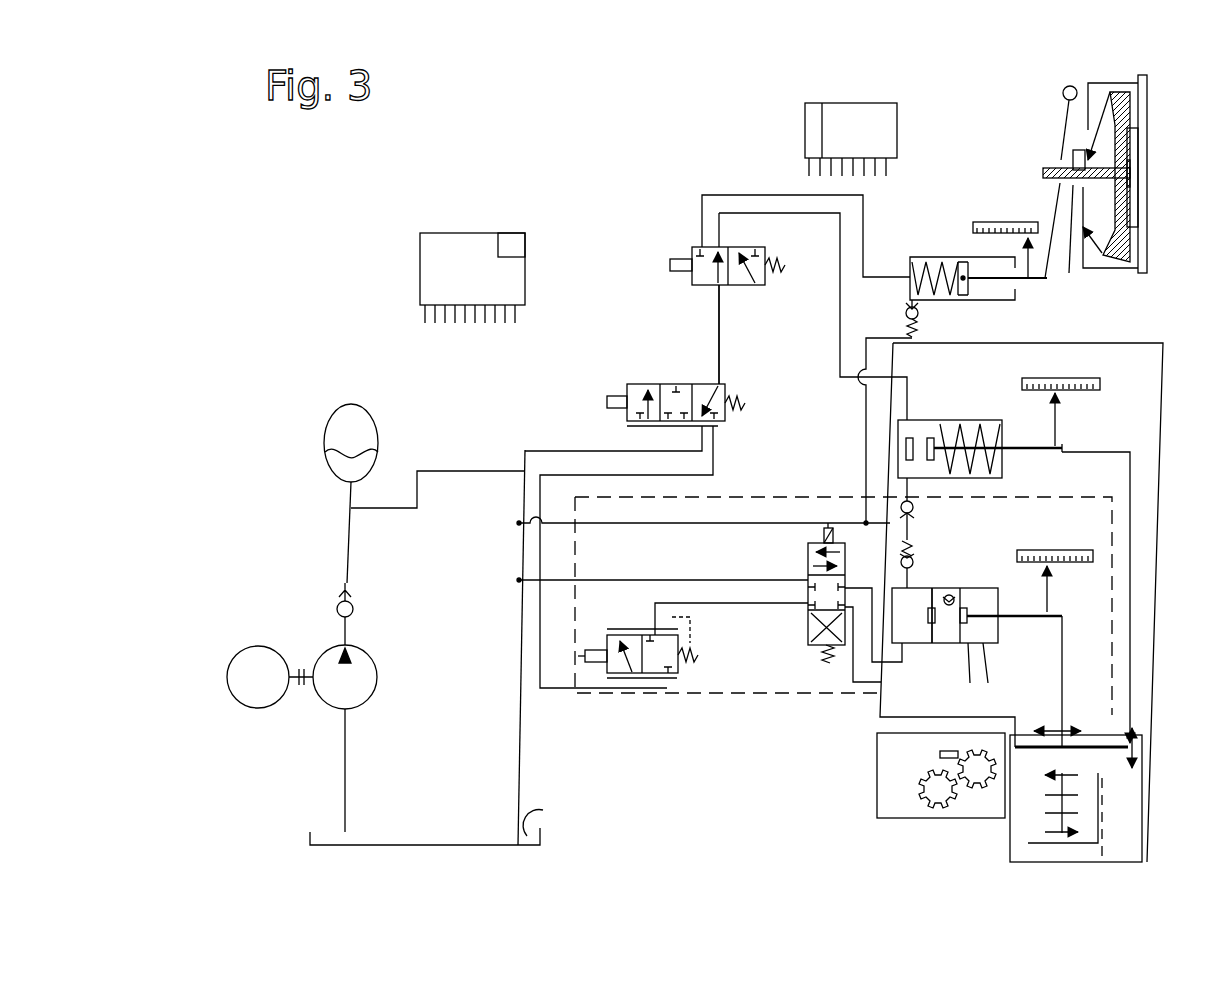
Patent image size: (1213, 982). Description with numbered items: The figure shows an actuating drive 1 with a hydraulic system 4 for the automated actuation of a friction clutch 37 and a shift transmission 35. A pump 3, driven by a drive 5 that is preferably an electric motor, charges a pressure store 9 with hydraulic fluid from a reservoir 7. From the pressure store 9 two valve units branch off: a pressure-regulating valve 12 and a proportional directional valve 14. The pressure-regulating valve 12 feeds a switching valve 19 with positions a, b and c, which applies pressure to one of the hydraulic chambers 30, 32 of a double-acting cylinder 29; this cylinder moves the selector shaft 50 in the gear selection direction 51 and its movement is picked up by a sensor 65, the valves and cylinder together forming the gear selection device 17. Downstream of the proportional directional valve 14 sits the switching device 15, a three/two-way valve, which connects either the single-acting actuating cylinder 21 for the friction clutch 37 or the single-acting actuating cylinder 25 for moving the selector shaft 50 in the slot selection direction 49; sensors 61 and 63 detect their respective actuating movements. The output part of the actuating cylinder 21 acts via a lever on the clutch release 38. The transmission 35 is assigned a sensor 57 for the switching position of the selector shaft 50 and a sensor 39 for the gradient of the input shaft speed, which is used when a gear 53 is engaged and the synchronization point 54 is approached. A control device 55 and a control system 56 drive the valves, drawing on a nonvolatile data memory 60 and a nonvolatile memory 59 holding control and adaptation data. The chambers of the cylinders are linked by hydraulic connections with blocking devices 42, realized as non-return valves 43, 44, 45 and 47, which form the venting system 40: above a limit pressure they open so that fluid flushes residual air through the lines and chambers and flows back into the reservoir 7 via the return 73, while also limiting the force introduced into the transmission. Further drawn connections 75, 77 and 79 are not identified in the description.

The actuating drive 1 is at (492, 200).
The pump 3 is at (360, 668).
The hydraulic system 4 is at (711, 705).
The drive 5 is at (246, 654).
The reservoir 7 is at (548, 820).
The pressure store 9 is at (322, 415).
The pressure-regulating valve 12 is at (615, 632).
The proportional directional valve 14 is at (735, 381).
The switching device 15 is at (694, 246).
The gear selection device 17 is at (700, 697).
The switching valve 19 is at (800, 648).
The actuating cylinder 21 is at (940, 257).
The actuating cylinder 25 is at (962, 417).
The double-acting cylinder 29 is at (922, 600).
The hydraulic chamber 30 is at (917, 633).
The hydraulic chamber 32 is at (971, 676).
The transmission 35 is at (888, 805).
The friction clutch 37 is at (1113, 82).
The clutch release 38 is at (1086, 196).
The sensor 39 is at (940, 755).
The venting system 40 is at (853, 512).
The blocking devices 42 is at (903, 313).
The non-return valve 43 is at (972, 585).
The non-return valve 44 is at (914, 507).
The non-return valve 45 is at (918, 548).
The non-return valve 47 is at (922, 325).
The slot selection direction 49 is at (1138, 746).
The selector shaft 50 is at (1090, 745).
The gear selection direction 51 is at (1051, 727).
The gear 53 is at (1030, 830).
The synchronization point 54 is at (1070, 766).
The control device 55 is at (435, 252).
The control system 56 is at (858, 110).
The sensor 57 is at (1112, 812).
The nonvolatile memory 59 is at (527, 243).
The nonvolatile data memory 60 is at (812, 110).
The sensor 61 is at (1000, 221).
The sensor 63 is at (1084, 377).
The sensor 65 is at (1062, 551).
The return 73 is at (520, 778).
The return connection 75 is at (722, 431).
The connecting line 77 is at (720, 380).
The return line 79 is at (698, 438).